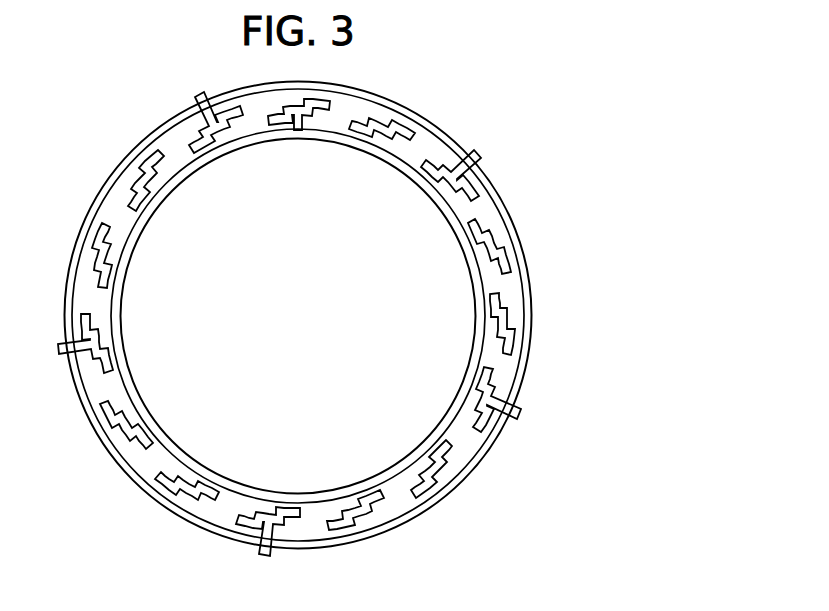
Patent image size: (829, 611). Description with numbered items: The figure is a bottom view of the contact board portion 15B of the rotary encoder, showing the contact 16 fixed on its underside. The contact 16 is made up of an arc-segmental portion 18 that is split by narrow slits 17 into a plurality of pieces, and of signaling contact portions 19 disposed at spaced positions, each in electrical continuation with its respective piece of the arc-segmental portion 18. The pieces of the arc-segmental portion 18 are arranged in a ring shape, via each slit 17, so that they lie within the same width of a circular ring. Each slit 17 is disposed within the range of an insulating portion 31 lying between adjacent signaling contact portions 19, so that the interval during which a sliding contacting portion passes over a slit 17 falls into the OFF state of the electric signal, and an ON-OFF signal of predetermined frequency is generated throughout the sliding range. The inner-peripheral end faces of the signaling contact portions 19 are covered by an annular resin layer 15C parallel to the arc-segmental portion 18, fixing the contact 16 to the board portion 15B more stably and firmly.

The board portion 15B is at (187, 507).
The resin layer 15C is at (177, 450).
The contact 16 is at (638, 188).
The slit 17 is at (477, 164).
The arc-segmental portion 18 is at (518, 330).
The signaling contact portion 19 is at (490, 372).
The insulating portion 31 is at (323, 516).